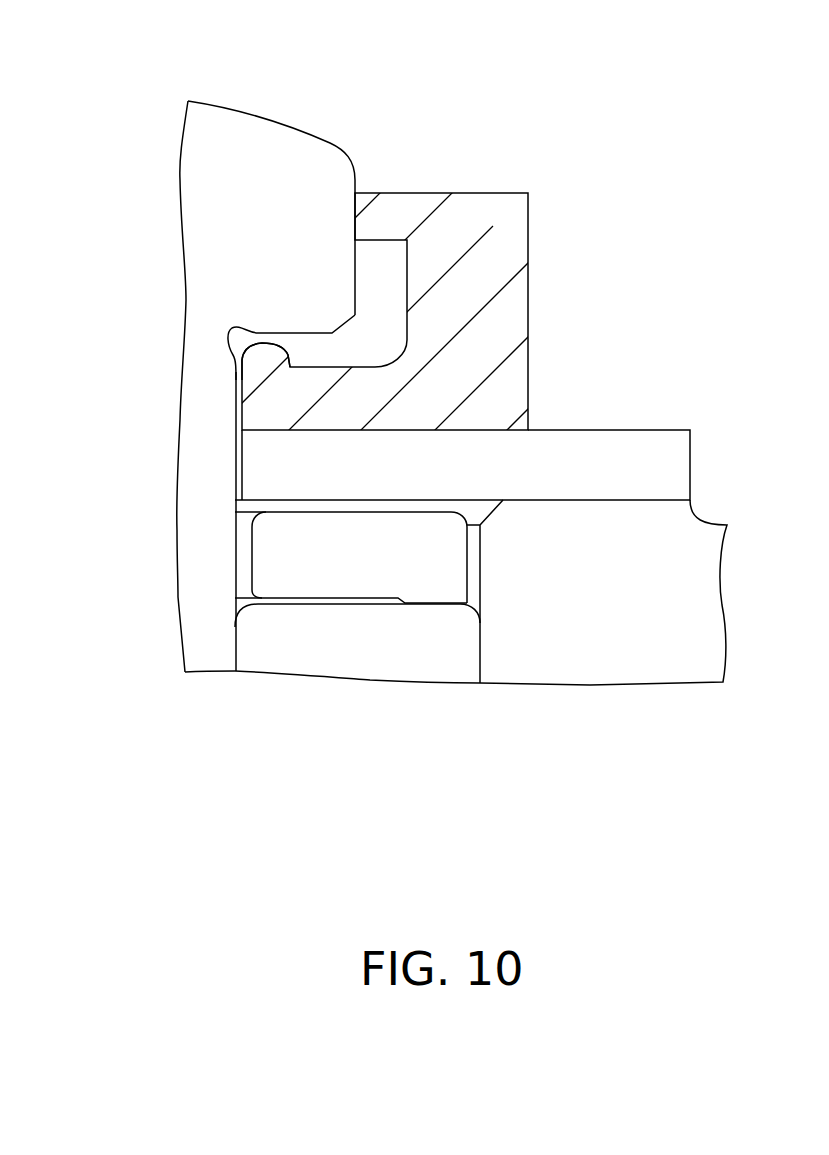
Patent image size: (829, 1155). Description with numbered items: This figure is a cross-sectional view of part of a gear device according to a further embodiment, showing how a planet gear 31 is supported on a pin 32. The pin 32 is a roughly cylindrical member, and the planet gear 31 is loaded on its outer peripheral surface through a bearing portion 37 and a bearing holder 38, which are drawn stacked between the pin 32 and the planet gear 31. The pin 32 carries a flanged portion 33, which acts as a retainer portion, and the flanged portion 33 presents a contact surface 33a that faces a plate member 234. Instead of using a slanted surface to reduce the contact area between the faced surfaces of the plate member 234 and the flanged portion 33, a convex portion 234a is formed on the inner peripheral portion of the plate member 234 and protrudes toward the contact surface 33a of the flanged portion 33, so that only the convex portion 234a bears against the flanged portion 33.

The planet gear 31 is at (602, 668).
The pin 32 is at (210, 577).
The flanged portion 33 is at (268, 145).
The contact surface 33a is at (290, 338).
The bearing portion 37 is at (352, 653).
The bearing holder 38 is at (422, 575).
The plate member 234 is at (483, 212).
The convex portion 234a is at (260, 361).